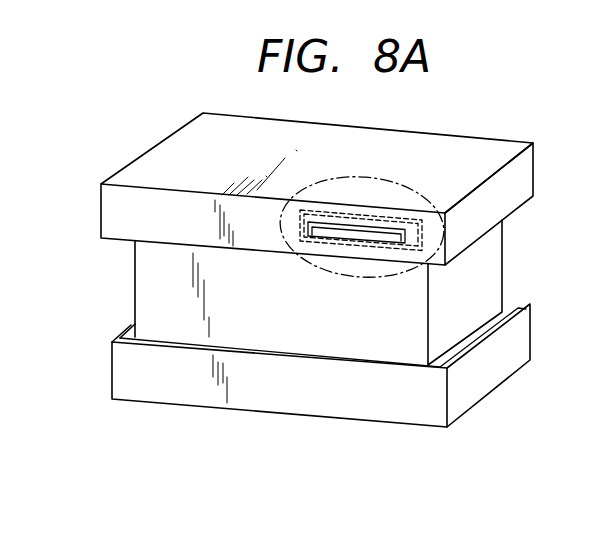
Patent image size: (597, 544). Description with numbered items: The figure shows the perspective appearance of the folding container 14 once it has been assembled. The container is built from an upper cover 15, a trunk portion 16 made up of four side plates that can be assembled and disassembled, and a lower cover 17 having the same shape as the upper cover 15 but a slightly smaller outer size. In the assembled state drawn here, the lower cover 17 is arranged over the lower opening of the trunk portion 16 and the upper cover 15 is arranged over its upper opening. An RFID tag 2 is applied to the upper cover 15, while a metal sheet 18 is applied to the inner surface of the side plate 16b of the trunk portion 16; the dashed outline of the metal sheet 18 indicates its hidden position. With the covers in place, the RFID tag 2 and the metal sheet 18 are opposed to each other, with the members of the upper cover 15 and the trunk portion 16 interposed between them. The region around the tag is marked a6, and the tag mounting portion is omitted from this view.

The folding container 14 is at (338, 176).
The upper cover 15 is at (503, 198).
The RFID tag 2 is at (318, 233).
The metal sheet 18 is at (347, 249).
The region a6 is at (376, 278).
The trunk portion 16 is at (302, 323).
The side plate 16b is at (158, 271).
The lower cover 17 is at (487, 382).